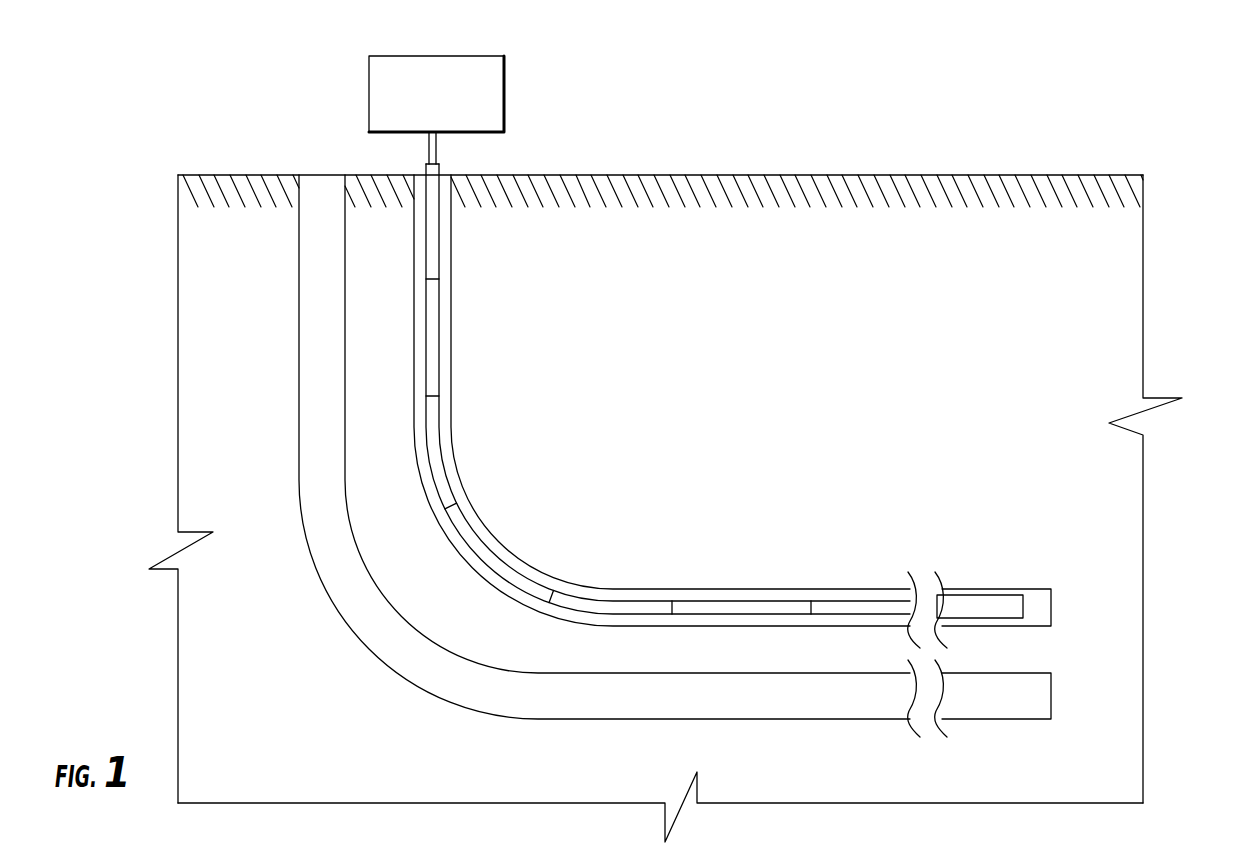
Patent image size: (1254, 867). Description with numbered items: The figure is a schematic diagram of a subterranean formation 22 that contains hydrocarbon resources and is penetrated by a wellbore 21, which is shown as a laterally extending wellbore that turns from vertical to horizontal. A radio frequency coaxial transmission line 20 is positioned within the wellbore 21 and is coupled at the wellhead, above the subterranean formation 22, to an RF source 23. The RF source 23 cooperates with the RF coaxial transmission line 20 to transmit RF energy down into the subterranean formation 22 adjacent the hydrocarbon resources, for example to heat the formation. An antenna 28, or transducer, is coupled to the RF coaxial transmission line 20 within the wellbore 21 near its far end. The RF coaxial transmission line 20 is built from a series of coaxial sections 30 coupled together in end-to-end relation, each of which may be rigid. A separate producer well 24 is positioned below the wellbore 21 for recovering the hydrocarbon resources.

The RF coaxial transmission line 20 is at (671, 477).
The wellbore 21 is at (446, 215).
The subterranean formation 22 is at (752, 230).
The RF source 23 is at (505, 70).
The producer well 24 is at (316, 257).
The antenna 28 is at (973, 608).
The coaxial section 30 is at (432, 418).